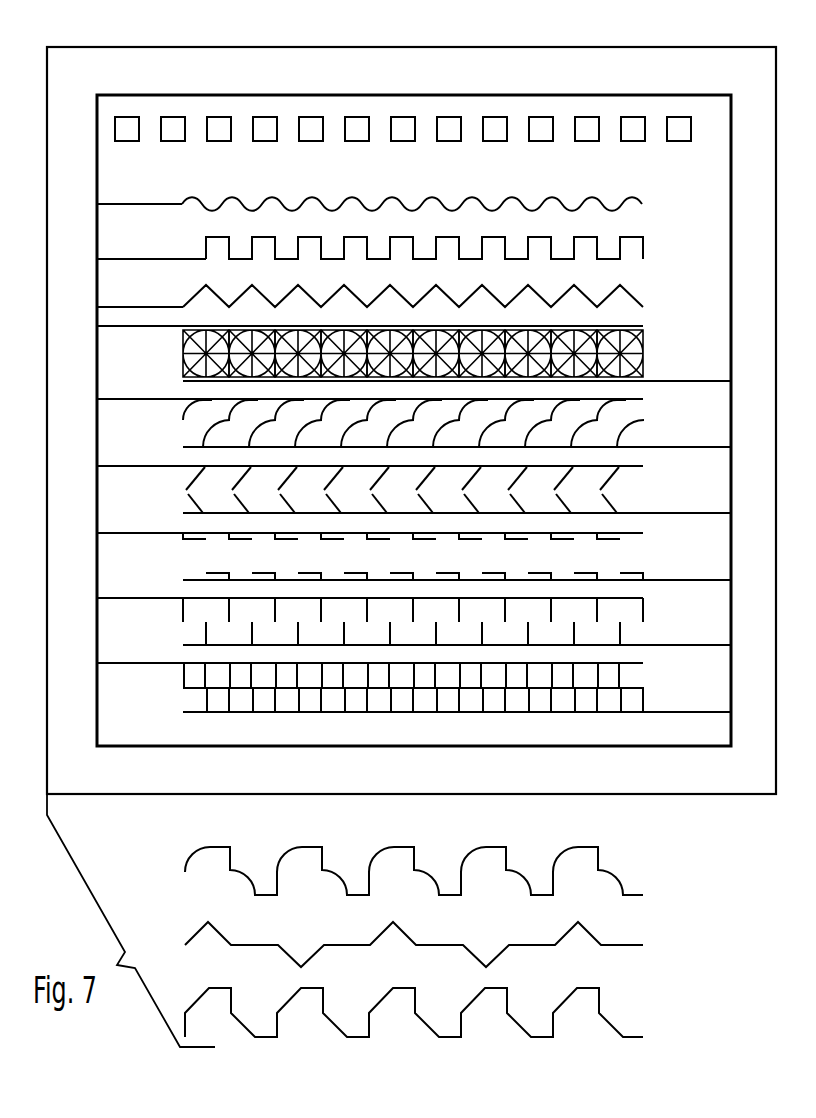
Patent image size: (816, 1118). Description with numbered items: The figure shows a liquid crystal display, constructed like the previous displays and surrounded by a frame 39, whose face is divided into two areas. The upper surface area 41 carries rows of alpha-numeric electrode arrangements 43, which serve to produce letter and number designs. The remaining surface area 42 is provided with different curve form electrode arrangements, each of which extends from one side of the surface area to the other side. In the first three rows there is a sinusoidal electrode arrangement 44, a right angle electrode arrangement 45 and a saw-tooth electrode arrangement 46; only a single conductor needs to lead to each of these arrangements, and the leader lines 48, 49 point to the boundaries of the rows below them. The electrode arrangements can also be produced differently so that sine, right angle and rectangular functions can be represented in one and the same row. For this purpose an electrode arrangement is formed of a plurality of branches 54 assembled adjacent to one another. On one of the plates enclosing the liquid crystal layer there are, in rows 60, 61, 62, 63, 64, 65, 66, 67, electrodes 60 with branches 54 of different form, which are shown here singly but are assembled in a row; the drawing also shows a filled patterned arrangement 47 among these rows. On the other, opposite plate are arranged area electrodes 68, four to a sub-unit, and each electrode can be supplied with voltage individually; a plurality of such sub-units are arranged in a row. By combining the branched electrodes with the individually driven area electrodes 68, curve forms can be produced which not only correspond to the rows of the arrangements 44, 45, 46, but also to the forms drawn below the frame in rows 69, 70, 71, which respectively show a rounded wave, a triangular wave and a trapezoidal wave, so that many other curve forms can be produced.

The frame 39 is at (68, 63).
The surface area 41 is at (147, 113).
The surface area 42 is at (171, 284).
The alpha-numeric electrode arrangements 43 is at (490, 143).
The sinusoidal electrode arrangement 44 is at (431, 207).
The right angle electrode arrangement 45 is at (443, 249).
The saw-tooth electrode arrangement 46 is at (431, 296).
The patterned track 47 is at (431, 353).
The track boundary line 48 is at (158, 402).
The track boundary line 49 is at (182, 459).
The branches 54 is at (212, 440).
The electrodes 60 is at (431, 410).
The row 61 is at (431, 434).
The row 62 is at (433, 479).
The row 63 is at (431, 500).
The row 64 is at (431, 547).
The row 65 is at (431, 569).
The row 66 is at (431, 608).
The row 67 is at (431, 632).
The area electrodes 68 is at (431, 687).
The row 69 is at (433, 871).
The row 70 is at (433, 944).
The row 71 is at (433, 1012).